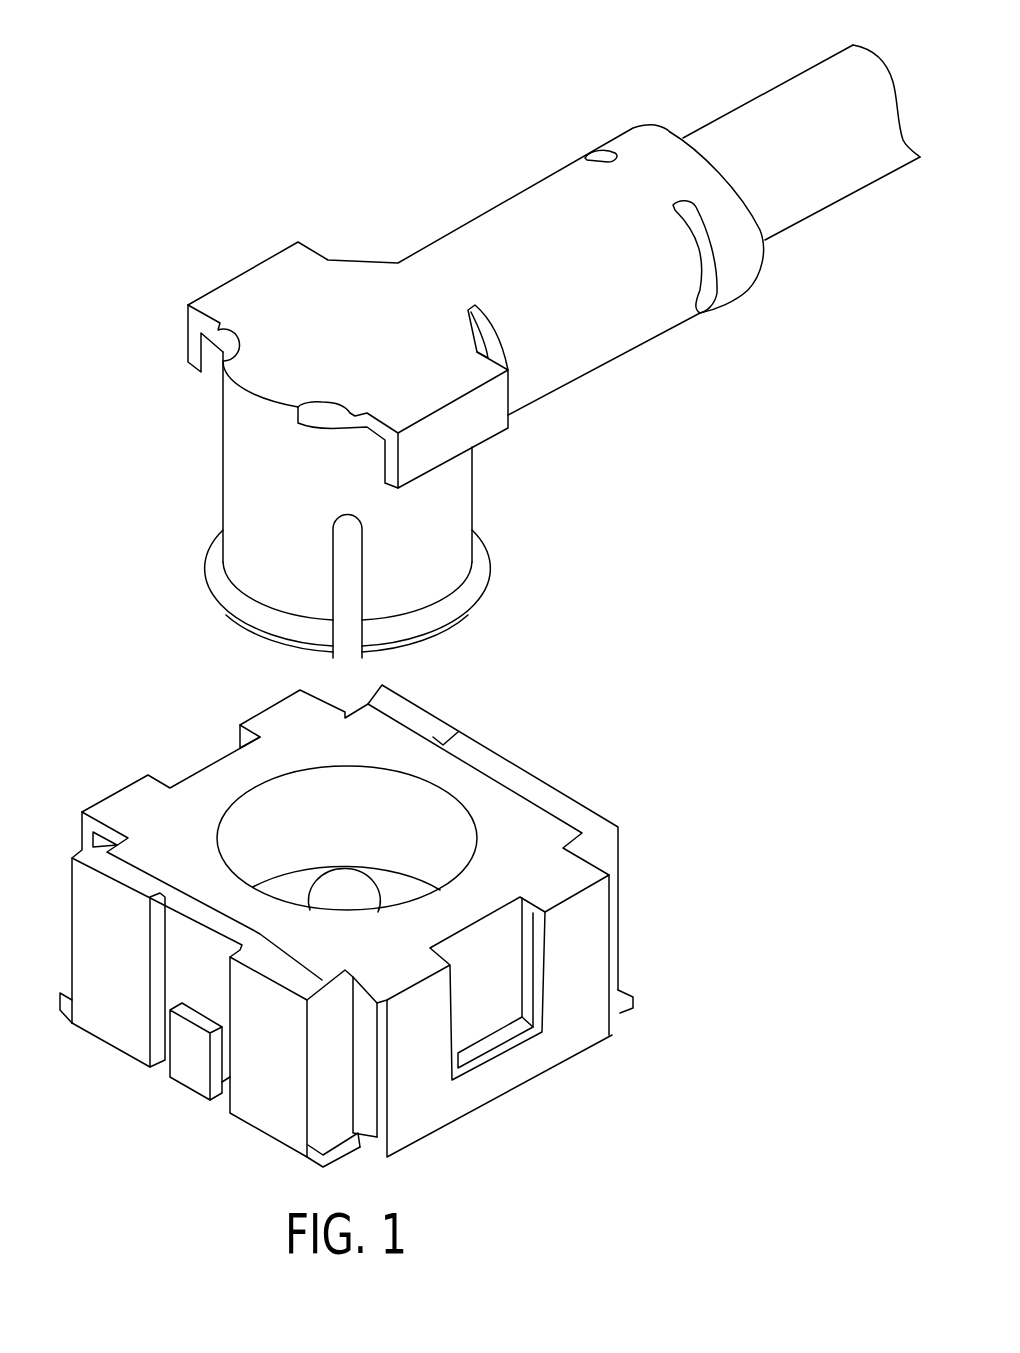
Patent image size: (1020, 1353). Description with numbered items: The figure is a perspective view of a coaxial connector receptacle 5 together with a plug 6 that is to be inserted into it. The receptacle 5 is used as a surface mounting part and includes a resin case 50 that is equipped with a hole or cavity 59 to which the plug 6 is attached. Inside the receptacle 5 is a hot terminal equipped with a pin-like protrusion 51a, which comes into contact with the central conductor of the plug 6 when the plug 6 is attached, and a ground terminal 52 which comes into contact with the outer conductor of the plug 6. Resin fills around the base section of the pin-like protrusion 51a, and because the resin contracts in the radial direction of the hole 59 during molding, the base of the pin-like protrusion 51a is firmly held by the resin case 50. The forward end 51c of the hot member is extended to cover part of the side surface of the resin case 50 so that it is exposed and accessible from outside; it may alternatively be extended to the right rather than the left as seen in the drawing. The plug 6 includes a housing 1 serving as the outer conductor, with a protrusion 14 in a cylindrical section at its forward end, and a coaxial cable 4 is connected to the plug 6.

The housing 1 is at (348, 313).
The coaxial cable 4 is at (783, 110).
The plug 6 is at (434, 214).
The protrusion 14 is at (472, 592).
The receptacle 5 is at (549, 730).
The resin case 50 is at (587, 818).
The ground terminal 52 is at (317, 750).
The hole 59 is at (398, 796).
The pin-like protrusion 51a is at (345, 888).
The forward end 51c is at (188, 1070).